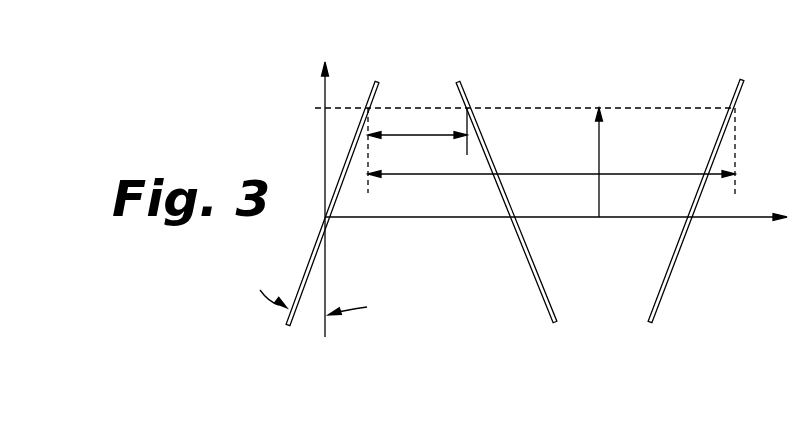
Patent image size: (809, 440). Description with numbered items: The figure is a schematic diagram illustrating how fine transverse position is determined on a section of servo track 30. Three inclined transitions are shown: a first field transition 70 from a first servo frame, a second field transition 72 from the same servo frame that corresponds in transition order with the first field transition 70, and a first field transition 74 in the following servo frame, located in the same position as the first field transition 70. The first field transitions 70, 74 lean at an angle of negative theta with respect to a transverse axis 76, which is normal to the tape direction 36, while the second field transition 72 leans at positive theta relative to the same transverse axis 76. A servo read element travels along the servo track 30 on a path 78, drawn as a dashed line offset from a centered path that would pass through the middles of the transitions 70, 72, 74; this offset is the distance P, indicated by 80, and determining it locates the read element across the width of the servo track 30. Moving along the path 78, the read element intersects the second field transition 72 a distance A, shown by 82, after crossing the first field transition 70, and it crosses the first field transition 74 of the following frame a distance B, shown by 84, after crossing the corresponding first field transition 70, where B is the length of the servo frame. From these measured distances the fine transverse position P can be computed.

The servo track 30 is at (280, 110).
The tape direction 36 is at (710, 222).
The first field transition 70 is at (370, 95).
The second field transition 72 is at (463, 92).
The first field transition 74 is at (740, 92).
The transverse axis 76 is at (326, 333).
The path 78 is at (652, 107).
The distance P 80 is at (600, 157).
The distance A 82 is at (407, 137).
The distance B 84 is at (528, 175).